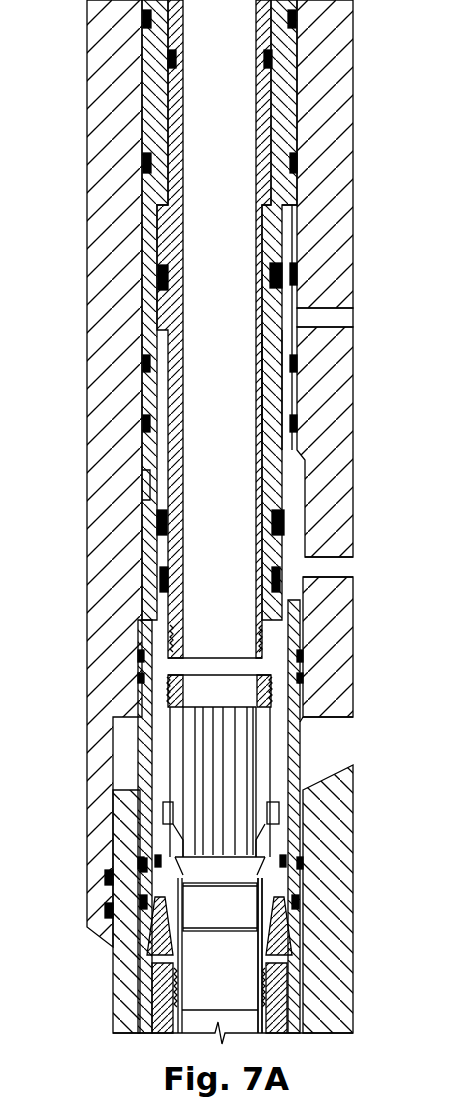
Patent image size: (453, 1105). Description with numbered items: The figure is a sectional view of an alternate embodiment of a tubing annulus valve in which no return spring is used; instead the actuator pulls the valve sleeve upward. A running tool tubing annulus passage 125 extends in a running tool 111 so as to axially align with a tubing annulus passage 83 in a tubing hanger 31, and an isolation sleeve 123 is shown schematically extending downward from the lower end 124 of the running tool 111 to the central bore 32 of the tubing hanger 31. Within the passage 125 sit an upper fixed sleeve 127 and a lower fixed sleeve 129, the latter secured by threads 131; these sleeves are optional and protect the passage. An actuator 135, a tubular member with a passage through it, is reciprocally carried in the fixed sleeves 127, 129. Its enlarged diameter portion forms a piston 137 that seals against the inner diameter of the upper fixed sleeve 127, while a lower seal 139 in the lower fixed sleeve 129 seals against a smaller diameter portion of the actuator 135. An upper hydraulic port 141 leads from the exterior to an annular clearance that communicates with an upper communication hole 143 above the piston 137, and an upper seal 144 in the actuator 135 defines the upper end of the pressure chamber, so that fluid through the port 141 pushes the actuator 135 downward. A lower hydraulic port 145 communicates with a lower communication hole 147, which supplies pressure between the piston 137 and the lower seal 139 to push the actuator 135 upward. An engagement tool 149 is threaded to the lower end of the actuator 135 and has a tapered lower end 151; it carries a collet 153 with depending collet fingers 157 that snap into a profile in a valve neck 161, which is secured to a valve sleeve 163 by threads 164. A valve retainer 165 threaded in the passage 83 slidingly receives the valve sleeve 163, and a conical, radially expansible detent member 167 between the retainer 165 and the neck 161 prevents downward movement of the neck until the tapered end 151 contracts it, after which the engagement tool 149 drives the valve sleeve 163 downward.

The tubing hanger 31 is at (350, 966).
The central bore 32 is at (113, 1028).
The tubing annulus passage 83 is at (140, 920).
The running tool 111 is at (340, 450).
The isolation sleeve 123 is at (100, 772).
The lower end 124 is at (333, 720).
The running tool tubing annulus passage 125 is at (300, 92).
The upper fixed sleeve 127 is at (300, 188).
The lower fixed sleeve 129 is at (303, 635).
The threads 131 is at (305, 605).
The actuator 135 is at (300, 392).
The piston 137 is at (300, 270).
The lower seal 139 is at (300, 520).
The upper hydraulic port 141 is at (335, 315).
The upper communication hole 143 is at (147, 230).
The upper seal 144 is at (147, 45).
The lower hydraulic port 145 is at (335, 567).
The lower communication hole 147 is at (147, 478).
The engagement tool 149 is at (303, 680).
The tapered lower end 151 is at (282, 903).
The collet 153 is at (197, 747).
The collet fingers 157 is at (270, 846).
The valve neck 161 is at (167, 923).
The valve sleeve 163 is at (283, 1028).
The threads 164 is at (270, 996).
The valve retainer 165 is at (137, 993).
The detent member 167 is at (282, 935).